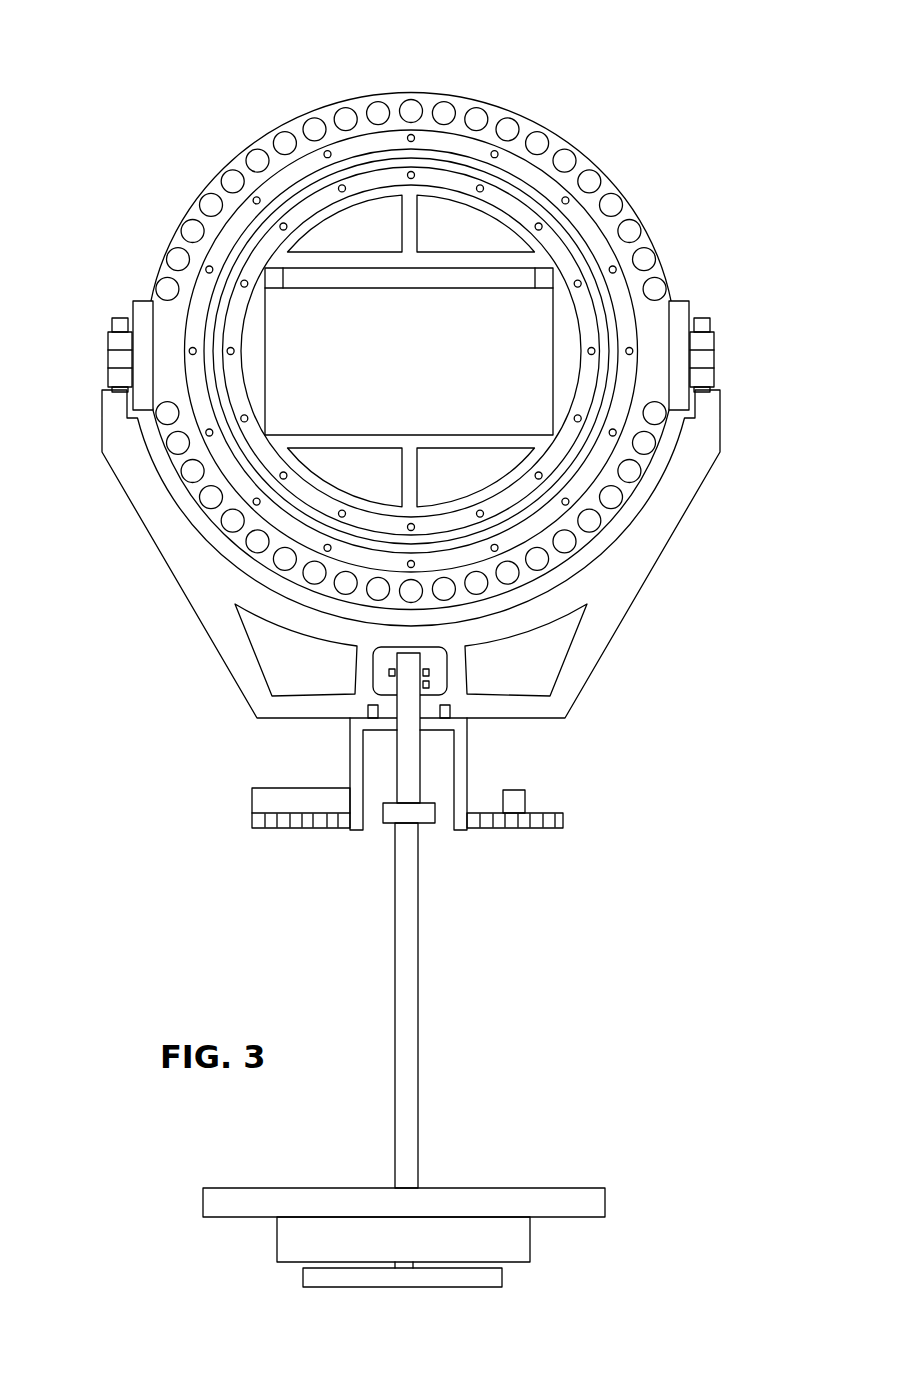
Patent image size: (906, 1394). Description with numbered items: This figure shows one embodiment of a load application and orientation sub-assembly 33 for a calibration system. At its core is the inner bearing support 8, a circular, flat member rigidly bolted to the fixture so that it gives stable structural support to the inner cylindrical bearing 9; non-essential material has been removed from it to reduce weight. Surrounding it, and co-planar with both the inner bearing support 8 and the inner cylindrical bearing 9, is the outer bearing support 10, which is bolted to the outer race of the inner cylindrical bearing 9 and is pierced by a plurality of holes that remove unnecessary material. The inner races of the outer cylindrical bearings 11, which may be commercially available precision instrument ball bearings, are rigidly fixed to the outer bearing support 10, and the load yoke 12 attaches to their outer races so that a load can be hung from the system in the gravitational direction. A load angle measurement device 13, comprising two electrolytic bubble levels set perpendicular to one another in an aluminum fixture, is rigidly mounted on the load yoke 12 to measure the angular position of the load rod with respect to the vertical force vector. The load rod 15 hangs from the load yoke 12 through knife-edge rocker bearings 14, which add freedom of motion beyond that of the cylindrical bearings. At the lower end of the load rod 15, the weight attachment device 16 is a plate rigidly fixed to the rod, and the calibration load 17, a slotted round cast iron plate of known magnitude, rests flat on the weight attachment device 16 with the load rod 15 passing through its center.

The inner bearing support 8 is at (340, 268).
The inner cylindrical bearing 9 is at (250, 229).
The outer bearing support 10 is at (268, 133).
The outer cylindrical bearings 11 is at (712, 355).
The load yoke 12 is at (645, 583).
The load angle measurement device 13 is at (252, 795).
The knife-edge rocker bearings 14 is at (420, 658).
The load rod 15 is at (420, 1015).
The weight attachment device 16 is at (463, 1291).
The calibration load 17 is at (593, 1188).
The load application and orientation sub-assembly 33 is at (158, 616).